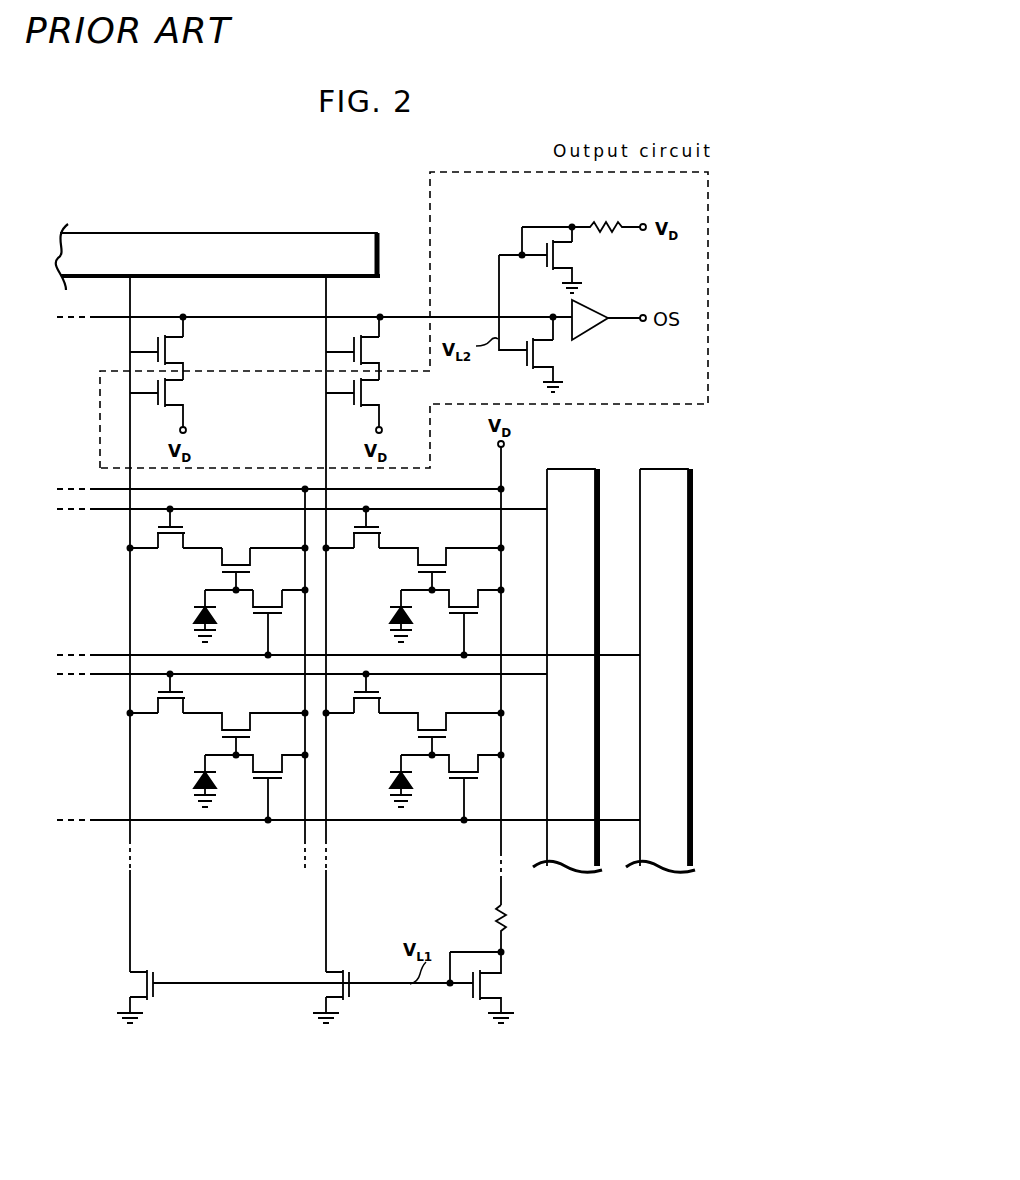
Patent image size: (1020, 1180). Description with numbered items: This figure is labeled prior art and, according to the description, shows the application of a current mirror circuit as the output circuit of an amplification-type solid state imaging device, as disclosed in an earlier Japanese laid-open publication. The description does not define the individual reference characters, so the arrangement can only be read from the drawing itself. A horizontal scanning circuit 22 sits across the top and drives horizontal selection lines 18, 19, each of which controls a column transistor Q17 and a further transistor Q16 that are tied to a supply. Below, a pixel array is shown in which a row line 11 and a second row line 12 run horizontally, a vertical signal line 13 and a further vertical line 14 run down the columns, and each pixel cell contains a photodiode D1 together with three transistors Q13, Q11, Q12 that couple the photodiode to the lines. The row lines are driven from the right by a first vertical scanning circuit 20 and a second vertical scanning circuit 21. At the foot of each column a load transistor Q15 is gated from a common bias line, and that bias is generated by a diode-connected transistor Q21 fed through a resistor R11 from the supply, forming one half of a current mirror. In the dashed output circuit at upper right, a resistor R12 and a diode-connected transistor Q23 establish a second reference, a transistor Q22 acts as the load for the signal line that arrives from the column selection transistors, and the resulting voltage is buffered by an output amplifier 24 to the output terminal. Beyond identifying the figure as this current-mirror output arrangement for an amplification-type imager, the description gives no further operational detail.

The horizontal scanning circuit 22 is at (298, 232).
The horizontal selection line 18 is at (131, 307).
The horizontal selection line 19 is at (242, 317).
The horizontal selection transistor Q17 is at (180, 352).
The reset transistor Q16 is at (180, 395).
The row selection line 11 is at (117, 511).
The reset line 12 is at (96, 654).
The vertical signal line 13 is at (128, 573).
The power supply line 14 is at (303, 527).
The row selection transistor Q13 is at (184, 543).
The amplifying transistor Q11 is at (220, 560).
The reset transistor Q12 is at (264, 600).
The photodiode D1 is at (197, 620).
The first vertical scanning circuit 20 is at (568, 468).
The second vertical scanning circuit 21 is at (664, 468).
The load resistor R12 is at (594, 225).
The load transistor Q23 is at (556, 272).
The output amplifier 24 is at (597, 302).
The load transistor Q22 is at (536, 368).
The load transistor Q15 is at (150, 970).
The load transistor Q21 is at (479, 1005).
The load resistor R11 is at (507, 927).